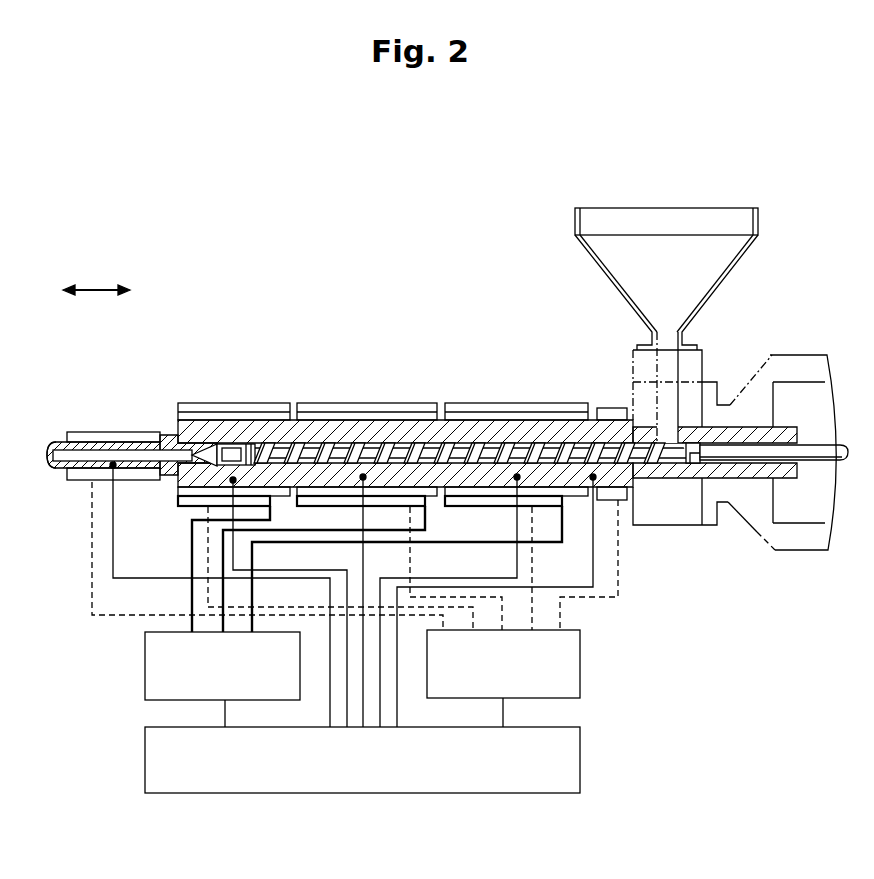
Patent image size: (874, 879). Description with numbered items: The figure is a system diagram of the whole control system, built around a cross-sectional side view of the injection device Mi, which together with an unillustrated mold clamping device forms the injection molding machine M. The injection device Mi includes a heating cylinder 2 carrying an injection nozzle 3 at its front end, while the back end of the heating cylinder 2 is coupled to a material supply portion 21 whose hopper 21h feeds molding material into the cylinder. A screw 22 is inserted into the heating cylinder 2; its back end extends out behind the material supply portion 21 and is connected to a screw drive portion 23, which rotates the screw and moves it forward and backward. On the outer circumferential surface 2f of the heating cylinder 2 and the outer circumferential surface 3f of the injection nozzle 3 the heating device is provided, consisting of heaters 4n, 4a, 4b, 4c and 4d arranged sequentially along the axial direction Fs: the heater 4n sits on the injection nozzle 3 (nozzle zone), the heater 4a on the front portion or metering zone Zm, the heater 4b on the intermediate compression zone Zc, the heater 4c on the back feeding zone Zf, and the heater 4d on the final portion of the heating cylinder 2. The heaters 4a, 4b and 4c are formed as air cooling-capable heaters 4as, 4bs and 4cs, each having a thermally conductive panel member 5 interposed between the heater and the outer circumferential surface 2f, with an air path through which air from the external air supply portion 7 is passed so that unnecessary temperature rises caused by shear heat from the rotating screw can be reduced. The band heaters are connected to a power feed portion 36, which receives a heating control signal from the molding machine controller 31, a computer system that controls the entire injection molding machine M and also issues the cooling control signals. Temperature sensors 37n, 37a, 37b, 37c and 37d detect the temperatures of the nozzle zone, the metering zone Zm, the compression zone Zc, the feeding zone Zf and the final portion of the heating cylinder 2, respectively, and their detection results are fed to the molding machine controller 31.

The heating cylinder 2 is at (470, 417).
The outer circumferential surface of the heating cylinder 2f is at (178, 420).
The injection nozzle 3 is at (62, 441).
The outer circumferential surface of the injection nozzle 3f is at (66, 440).
The heater 4a is at (190, 411).
The heater 4b is at (335, 402).
The heater 4c is at (577, 402).
The heater 4d is at (623, 499).
The heater 4n is at (112, 431).
The air cooling-capable heater 4as is at (228, 402).
The air cooling-capable heater 4bs is at (397, 402).
The air cooling-capable heater 4cs is at (557, 402).
The panel member 5 is at (282, 412).
The air supply portion 7 is at (145, 670).
The material supply portion 21 is at (722, 337).
The hopper 21h is at (673, 208).
The screw 22 is at (295, 419).
The screw drive portion 23 is at (782, 557).
The molding machine controller 31 is at (580, 765).
The power feed portion 36 is at (580, 662).
The temperature sensor 37a is at (233, 480).
The temperature sensor 37b is at (363, 477).
The temperature sensor 37c is at (517, 477).
The temperature sensor 37d is at (593, 477).
The temperature sensor 37n is at (115, 468).
The axial direction Fs is at (98, 290).
The injection molding machine M is at (420, 262).
The injection device Mi is at (280, 280).
The metering zone Zm is at (252, 380).
The compression zone Zc is at (353, 380).
The feeding zone Zf is at (512, 380).